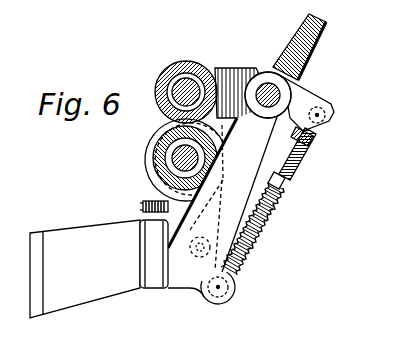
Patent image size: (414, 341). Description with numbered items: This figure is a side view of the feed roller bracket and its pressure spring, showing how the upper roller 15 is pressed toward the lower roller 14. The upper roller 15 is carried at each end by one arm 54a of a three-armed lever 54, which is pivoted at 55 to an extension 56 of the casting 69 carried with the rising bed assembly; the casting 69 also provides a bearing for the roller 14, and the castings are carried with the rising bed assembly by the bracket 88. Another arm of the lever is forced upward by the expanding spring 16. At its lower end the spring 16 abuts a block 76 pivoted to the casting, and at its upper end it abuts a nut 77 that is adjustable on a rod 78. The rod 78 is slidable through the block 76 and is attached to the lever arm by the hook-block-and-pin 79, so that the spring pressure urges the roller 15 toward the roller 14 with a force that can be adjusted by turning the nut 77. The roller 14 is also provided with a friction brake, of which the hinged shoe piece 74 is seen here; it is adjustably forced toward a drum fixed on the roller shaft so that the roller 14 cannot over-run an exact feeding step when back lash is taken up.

The lower roller 14 is at (155, 160).
The upper roller 15 is at (184, 62).
The spring 16 is at (270, 222).
The three-armed lever 54 is at (292, 86).
The arm of three-armed lever 54a is at (225, 125).
The pivot 55 is at (295, 80).
The extension of the casting 56 is at (225, 190).
The casting 69 is at (183, 277).
The shoe piece 74 is at (151, 177).
The block 76 is at (233, 290).
The nut 77 is at (283, 193).
The rod 78 is at (298, 162).
The hook-block-and-pin 79 is at (332, 108).
The bracket 88 is at (99, 269).